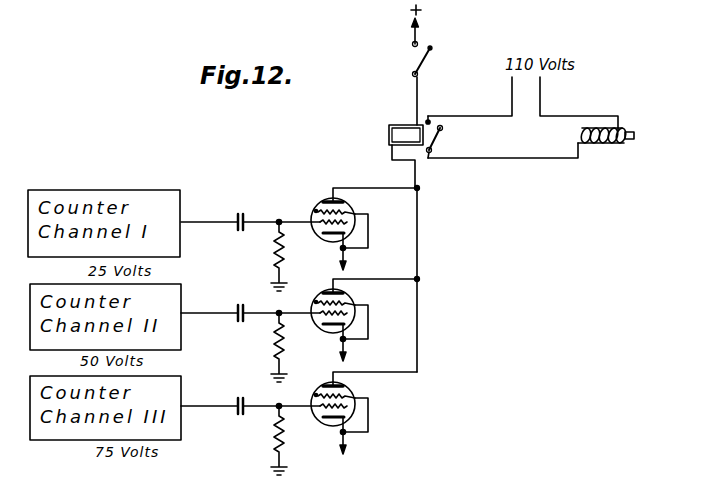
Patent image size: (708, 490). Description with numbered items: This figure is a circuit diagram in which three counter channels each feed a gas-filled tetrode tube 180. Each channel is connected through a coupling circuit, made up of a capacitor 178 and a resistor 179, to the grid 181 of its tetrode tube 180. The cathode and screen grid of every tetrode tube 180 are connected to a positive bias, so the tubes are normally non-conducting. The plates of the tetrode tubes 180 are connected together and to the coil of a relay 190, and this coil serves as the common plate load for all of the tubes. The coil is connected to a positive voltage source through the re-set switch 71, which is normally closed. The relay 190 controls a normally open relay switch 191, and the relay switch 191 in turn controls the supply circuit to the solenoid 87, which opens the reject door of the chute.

The re-set switch 71 is at (424, 67).
The relay 190 is at (394, 124).
The relay switch 191 is at (445, 139).
The solenoid 87 is at (625, 93).
The capacitor 178 is at (253, 192).
The resistor 179 is at (272, 254).
The gas-filled tetrode tube 180 is at (321, 196).
The grid 181 is at (317, 238).